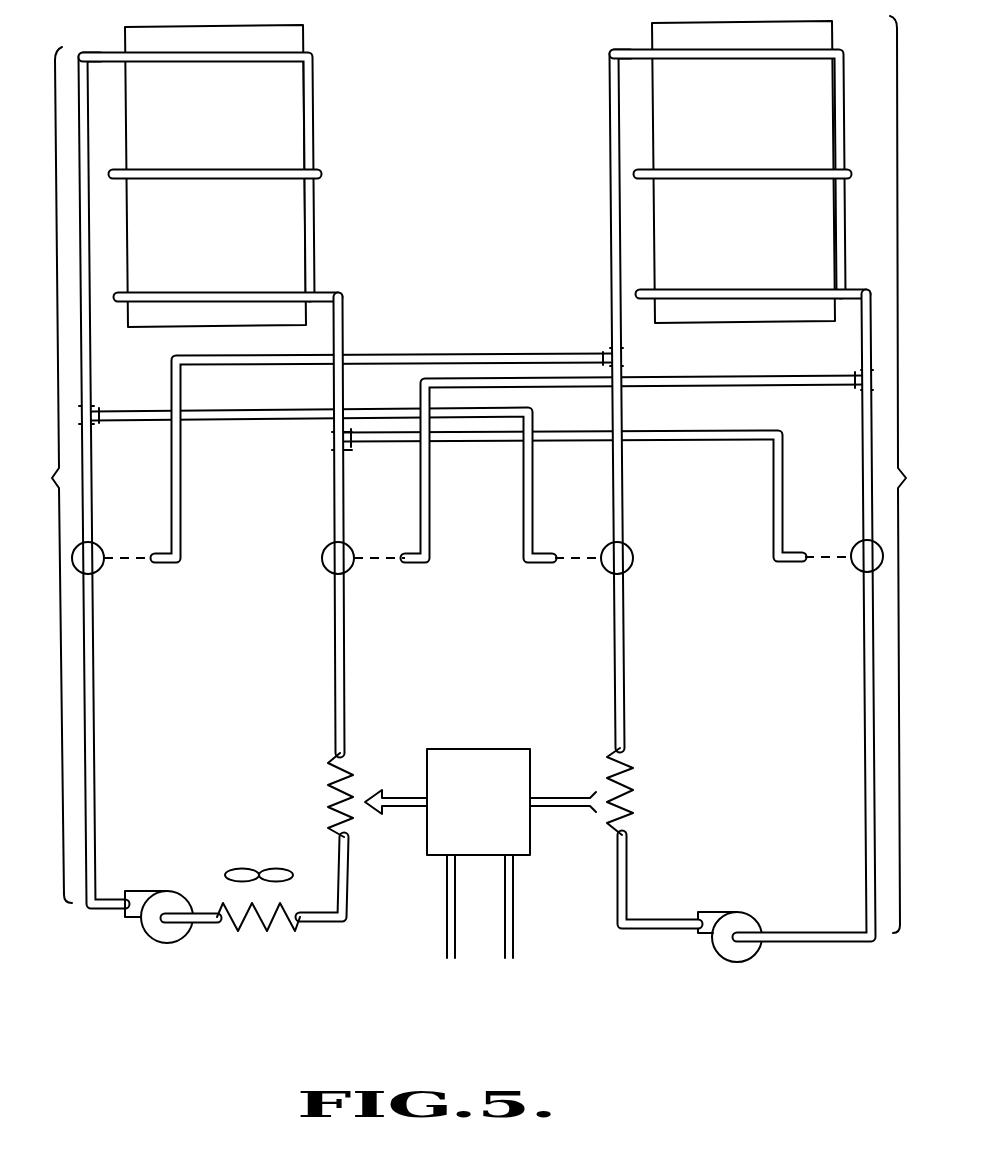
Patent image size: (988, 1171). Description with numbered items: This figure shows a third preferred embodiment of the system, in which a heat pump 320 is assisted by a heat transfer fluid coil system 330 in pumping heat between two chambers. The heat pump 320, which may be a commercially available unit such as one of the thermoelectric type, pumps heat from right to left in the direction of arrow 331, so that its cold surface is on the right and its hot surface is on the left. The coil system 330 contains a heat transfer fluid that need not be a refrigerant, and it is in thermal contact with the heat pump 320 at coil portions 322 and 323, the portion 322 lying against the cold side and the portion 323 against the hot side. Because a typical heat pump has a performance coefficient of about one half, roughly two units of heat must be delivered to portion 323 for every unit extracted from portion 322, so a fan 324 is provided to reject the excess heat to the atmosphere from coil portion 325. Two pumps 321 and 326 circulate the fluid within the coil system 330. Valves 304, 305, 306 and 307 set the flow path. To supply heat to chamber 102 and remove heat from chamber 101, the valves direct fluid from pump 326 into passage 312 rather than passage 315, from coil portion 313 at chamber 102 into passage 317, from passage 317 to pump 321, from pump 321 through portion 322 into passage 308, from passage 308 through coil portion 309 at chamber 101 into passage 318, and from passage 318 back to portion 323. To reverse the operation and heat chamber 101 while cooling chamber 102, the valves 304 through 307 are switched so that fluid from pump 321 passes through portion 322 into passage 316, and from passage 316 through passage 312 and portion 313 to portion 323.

The chamber 101 is at (761, 159).
The chamber 102 is at (240, 159).
The valve 304 is at (98, 575).
The valve 305 is at (328, 574).
The valve 306 is at (630, 564).
The valve 307 is at (857, 571).
The passage 308 is at (620, 488).
The coil portion 309 is at (847, 55).
The passage 312 is at (93, 365).
The coil portion 313 is at (318, 52).
The passage 315 is at (413, 354).
The passage 316 is at (227, 421).
The passage 317 is at (706, 418).
The passage 318 is at (730, 361).
The heat pump 320 is at (530, 855).
The pump 321 is at (740, 963).
The coil portion 322 is at (632, 823).
The coil portion 323 is at (358, 842).
The fan 324 is at (281, 865).
The coil portion 325 is at (260, 931).
The pump 326 is at (164, 944).
The heat transfer fluid coil system 330 is at (478, 474).
The arrow 331 is at (406, 797).